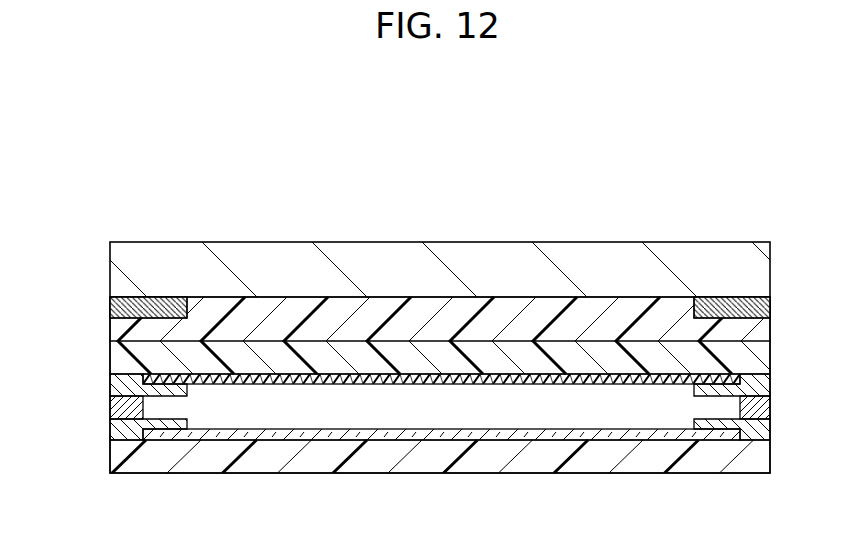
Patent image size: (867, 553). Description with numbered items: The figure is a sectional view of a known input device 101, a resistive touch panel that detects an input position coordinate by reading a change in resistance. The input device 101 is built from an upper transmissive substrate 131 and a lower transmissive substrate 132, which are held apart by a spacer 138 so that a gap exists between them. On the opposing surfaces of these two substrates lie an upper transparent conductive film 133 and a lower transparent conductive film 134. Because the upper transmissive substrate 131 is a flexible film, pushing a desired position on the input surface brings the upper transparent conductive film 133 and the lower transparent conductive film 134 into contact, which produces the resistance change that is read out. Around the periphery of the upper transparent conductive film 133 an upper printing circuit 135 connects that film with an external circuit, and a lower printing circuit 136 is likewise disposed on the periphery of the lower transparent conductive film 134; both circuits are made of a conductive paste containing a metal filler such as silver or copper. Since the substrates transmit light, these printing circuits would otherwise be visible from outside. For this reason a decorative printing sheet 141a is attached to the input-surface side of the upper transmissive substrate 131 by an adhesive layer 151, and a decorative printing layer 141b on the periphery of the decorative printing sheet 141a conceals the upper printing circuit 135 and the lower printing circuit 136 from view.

The input device 101 is at (566, 128).
The upper transmissive substrate 131 is at (518, 355).
The lower transmissive substrate 132 is at (417, 463).
The upper transparent conductive film 133 is at (360, 380).
The lower transparent conductive film 134 is at (240, 437).
The upper printing circuit 135 is at (753, 382).
The lower printing circuit 136 is at (760, 430).
The spacer 138 is at (112, 402).
The decorative printing sheet 141a is at (332, 250).
The decorative printing layer 141b is at (157, 303).
The adhesive layer 151 is at (223, 305).